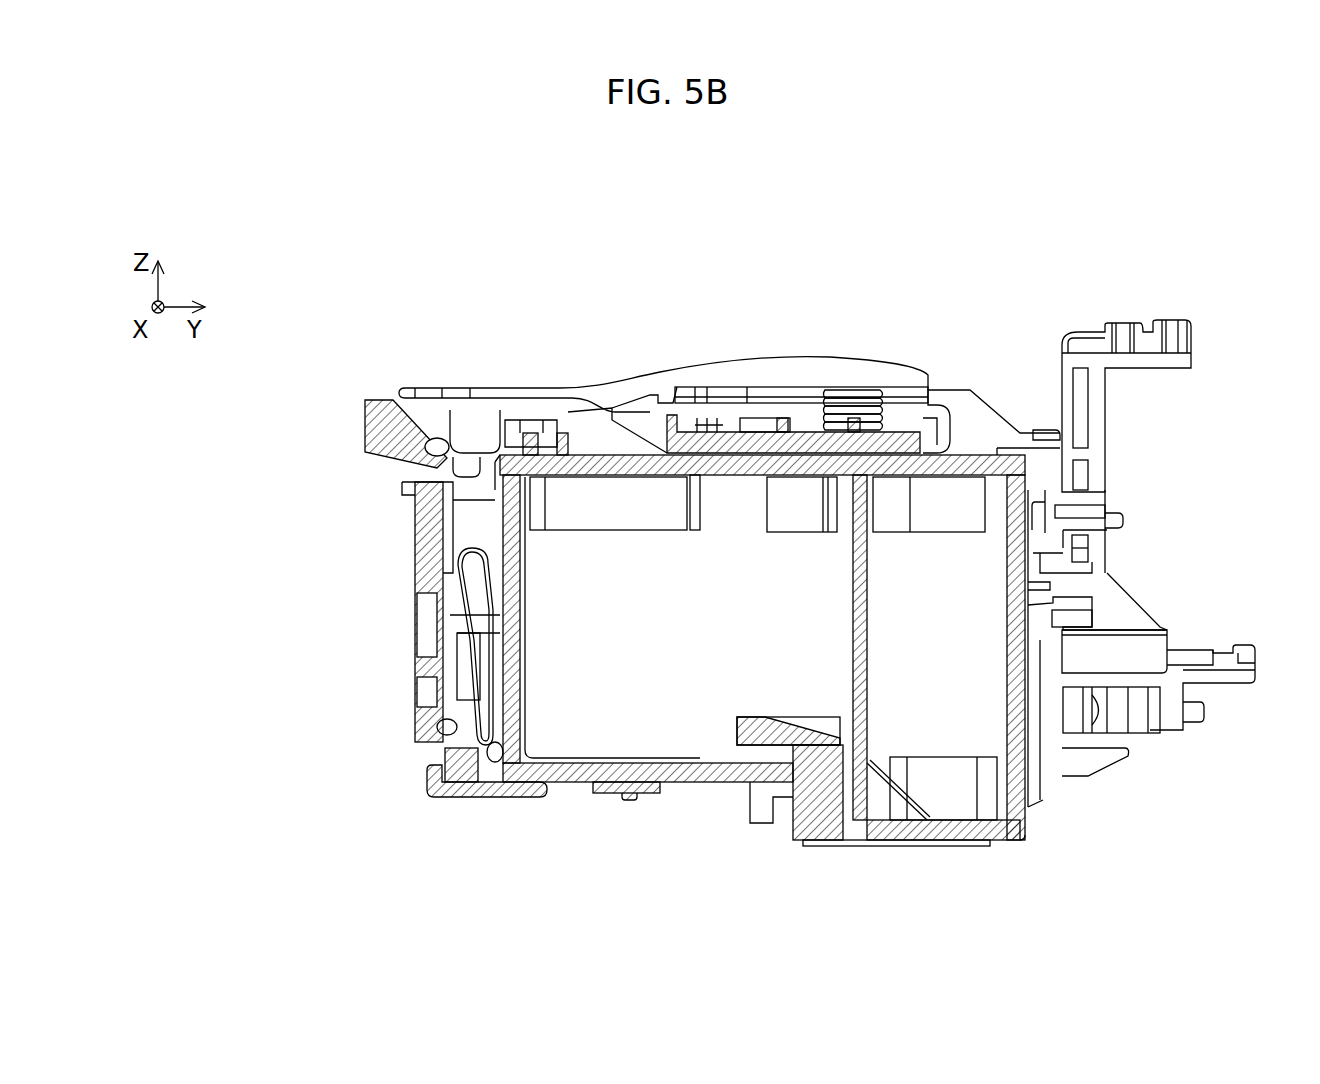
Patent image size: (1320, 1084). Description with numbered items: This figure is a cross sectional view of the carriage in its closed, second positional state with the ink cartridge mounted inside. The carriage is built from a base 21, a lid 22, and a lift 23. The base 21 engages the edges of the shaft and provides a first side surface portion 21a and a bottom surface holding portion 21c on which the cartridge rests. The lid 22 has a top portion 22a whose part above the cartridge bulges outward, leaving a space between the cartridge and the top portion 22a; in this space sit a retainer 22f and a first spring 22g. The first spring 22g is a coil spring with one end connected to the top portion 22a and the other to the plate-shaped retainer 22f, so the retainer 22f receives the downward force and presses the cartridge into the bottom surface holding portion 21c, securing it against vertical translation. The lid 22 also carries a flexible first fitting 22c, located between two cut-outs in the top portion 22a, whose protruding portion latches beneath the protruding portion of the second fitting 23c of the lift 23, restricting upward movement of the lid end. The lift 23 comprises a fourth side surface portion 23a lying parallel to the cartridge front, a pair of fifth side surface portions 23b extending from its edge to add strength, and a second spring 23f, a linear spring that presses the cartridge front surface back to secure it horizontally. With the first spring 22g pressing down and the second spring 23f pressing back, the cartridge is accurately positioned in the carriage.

The base 21 is at (726, 650).
The first side surface portion 21a is at (1058, 775).
The bottom surface holding portion 21c is at (647, 795).
The lid 22 is at (905, 297).
The top portion 22a is at (697, 383).
The first fitting 22c is at (462, 425).
The retainer 22f is at (782, 425).
The first spring 22g is at (860, 430).
The lift 23 is at (270, 425).
The fourth side surface portion 23a is at (432, 650).
The fifth side surface portion 23b is at (475, 528).
The second fitting 23c is at (365, 428).
The second spring 23f is at (468, 583).